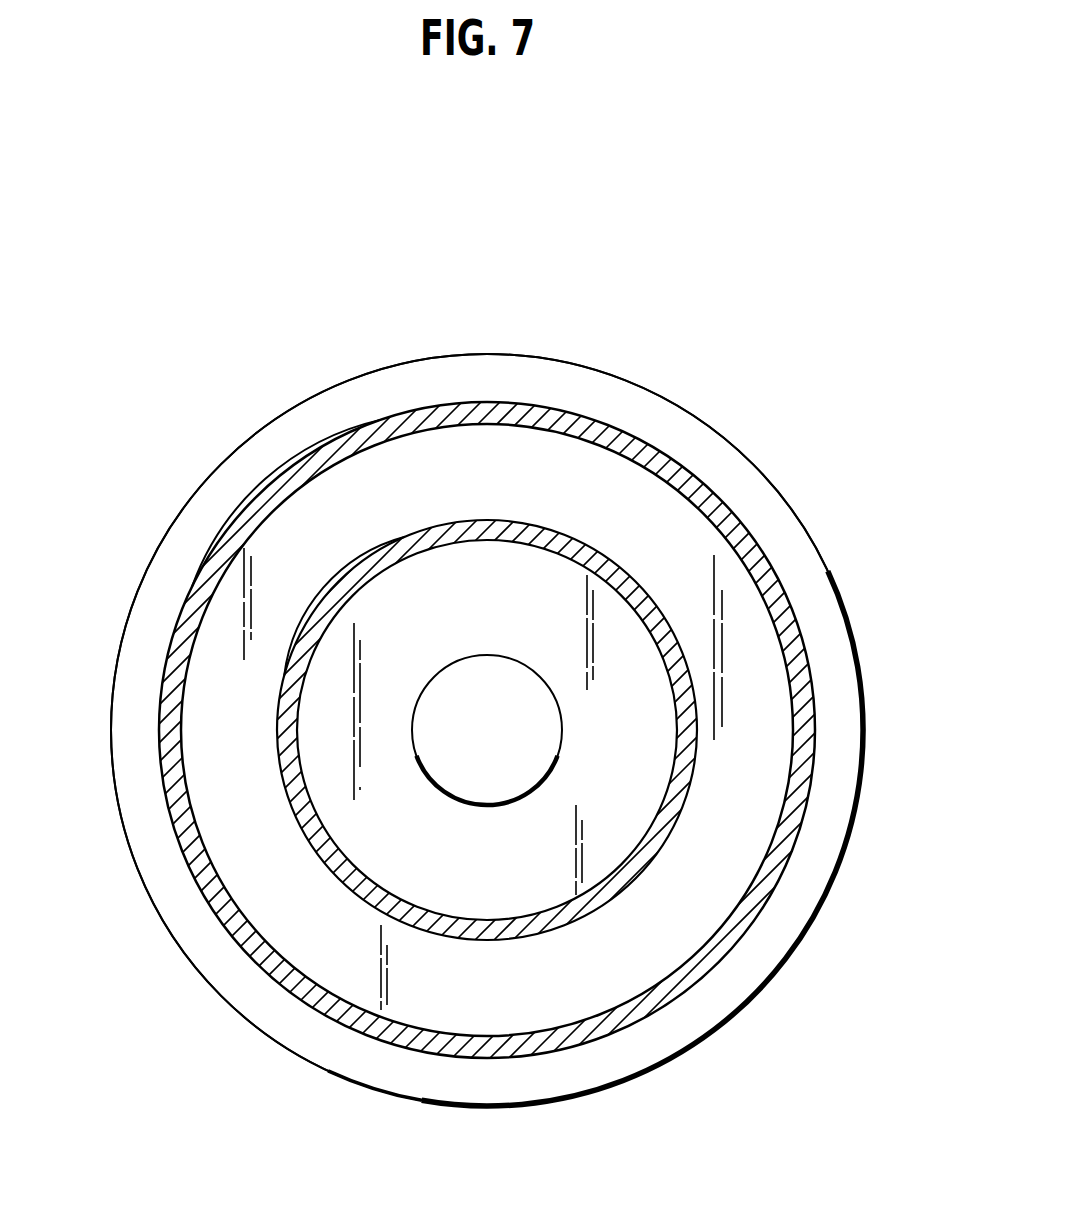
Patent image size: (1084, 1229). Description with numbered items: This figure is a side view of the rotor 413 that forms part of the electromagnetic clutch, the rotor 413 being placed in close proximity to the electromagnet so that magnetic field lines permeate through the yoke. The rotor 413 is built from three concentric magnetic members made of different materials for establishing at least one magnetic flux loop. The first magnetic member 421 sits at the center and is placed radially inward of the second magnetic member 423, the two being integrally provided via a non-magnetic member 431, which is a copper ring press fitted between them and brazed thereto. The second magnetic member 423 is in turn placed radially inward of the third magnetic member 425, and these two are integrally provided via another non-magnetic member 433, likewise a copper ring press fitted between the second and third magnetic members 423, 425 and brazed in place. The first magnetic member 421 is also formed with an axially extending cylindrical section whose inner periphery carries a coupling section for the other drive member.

The rotor 413 is at (575, 344).
The first magnetic member 421 is at (620, 825).
The second magnetic member 423 is at (768, 698).
The third magnetic member 425 is at (756, 486).
The non-magnetic member 431 is at (402, 530).
The non-magnetic member 433 is at (287, 467).